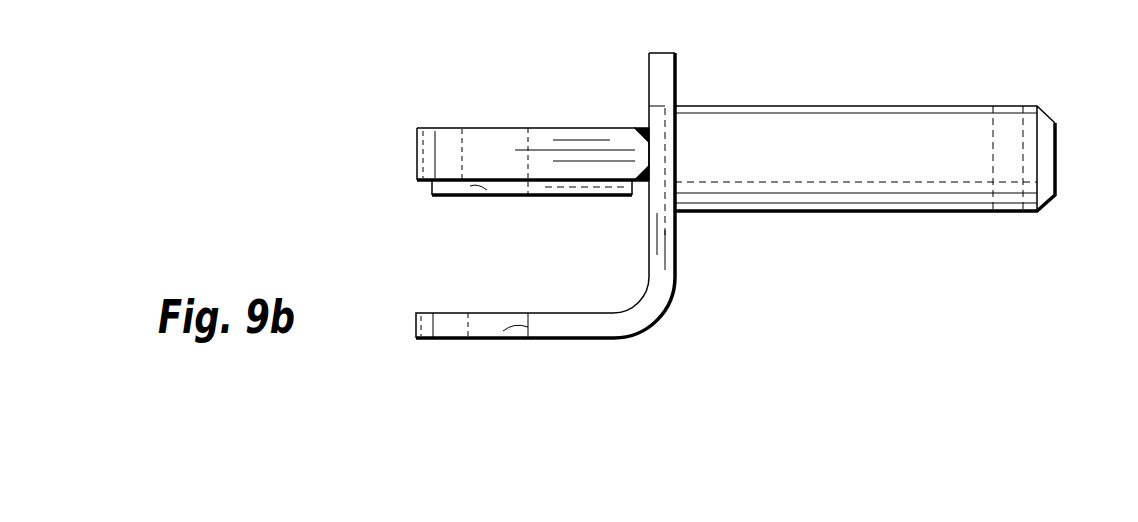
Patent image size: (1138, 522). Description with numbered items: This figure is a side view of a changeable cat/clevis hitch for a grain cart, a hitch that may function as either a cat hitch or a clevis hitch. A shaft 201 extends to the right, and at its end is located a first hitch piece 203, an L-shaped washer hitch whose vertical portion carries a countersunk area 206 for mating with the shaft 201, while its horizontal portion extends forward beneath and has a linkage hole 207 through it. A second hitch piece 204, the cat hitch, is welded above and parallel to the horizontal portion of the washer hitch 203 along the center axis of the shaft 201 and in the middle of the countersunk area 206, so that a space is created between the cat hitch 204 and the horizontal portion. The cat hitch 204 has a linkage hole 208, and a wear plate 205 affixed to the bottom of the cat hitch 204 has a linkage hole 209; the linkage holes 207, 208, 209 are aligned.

The shaft 201 is at (863, 157).
The first hitch piece 203 is at (660, 277).
The second hitch piece 204 is at (416, 128).
The wear plate 205 is at (430, 193).
The countersunk area 206 is at (653, 107).
The linkage hole 207 is at (500, 340).
The linkage hole 208 is at (528, 148).
The linkage hole 209 is at (483, 200).